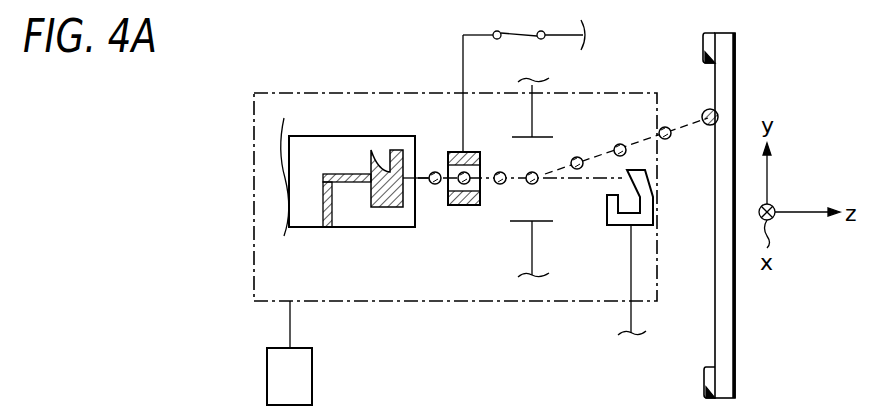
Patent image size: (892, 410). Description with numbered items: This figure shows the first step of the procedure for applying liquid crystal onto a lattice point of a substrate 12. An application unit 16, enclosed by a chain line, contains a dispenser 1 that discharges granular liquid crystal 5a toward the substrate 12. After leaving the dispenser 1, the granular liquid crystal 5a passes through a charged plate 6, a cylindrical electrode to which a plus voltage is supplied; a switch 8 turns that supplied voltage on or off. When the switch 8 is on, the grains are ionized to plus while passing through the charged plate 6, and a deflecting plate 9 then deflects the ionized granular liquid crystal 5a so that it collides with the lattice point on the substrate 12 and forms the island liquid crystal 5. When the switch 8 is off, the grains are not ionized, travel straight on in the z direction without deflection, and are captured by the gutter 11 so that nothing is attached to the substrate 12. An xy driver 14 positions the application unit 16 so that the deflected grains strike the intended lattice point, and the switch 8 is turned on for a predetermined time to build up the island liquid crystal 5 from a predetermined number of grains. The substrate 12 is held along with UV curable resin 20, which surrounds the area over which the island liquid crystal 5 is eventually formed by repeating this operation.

The dispenser 1 is at (355, 136).
The island liquid crystal 5 is at (703, 112).
The granular liquid crystal 5a is at (498, 185).
The charged plate 6 is at (457, 205).
The switch 8 is at (514, 42).
The deflecting plate 9 is at (547, 221).
The gutter 11 is at (653, 212).
The substrate 12 is at (737, 378).
The xy driver 14 is at (312, 377).
The application unit 16 is at (493, 301).
The UV curable resin 20 is at (704, 378).